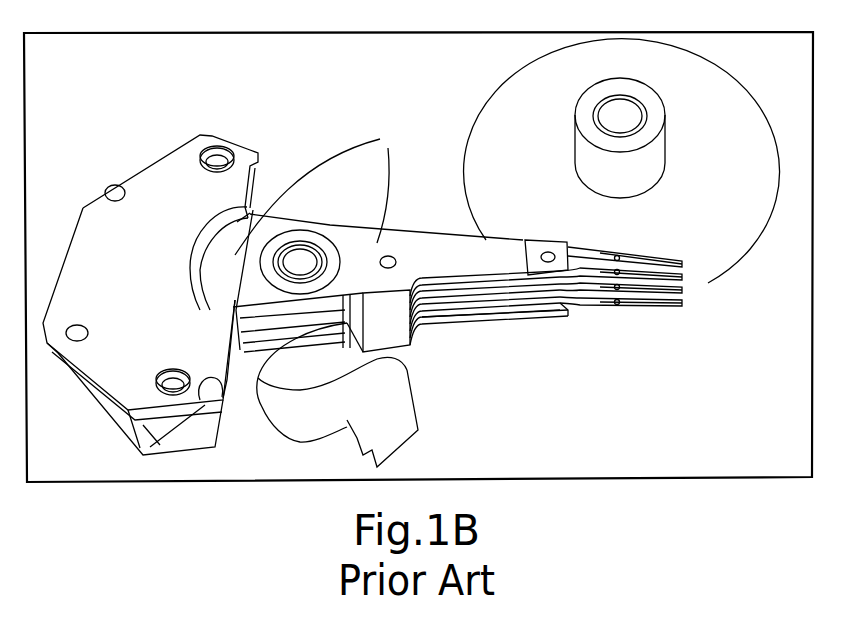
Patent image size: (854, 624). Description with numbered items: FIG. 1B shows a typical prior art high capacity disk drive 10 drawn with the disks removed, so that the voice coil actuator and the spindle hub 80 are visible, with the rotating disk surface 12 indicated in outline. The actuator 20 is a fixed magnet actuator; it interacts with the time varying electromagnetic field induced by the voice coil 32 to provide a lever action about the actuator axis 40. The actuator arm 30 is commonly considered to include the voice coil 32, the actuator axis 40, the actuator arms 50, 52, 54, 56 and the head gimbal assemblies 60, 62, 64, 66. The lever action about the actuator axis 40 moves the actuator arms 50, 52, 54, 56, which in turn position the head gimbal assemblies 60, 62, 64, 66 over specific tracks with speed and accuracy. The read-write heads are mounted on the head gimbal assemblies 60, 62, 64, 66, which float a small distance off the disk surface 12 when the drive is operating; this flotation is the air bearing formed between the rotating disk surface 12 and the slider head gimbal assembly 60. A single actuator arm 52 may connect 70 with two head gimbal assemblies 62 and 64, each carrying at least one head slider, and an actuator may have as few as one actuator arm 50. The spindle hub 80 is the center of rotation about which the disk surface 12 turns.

The disk drive 10 is at (327, 82).
The rotating disk surface 12 is at (703, 73).
The actuator 20 is at (160, 178).
The actuator arm 30 is at (467, 150).
The voice coil 32 is at (218, 272).
The actuator axis 40 is at (303, 255).
The actuator arm 50 is at (473, 250).
The actuator arm 52 is at (522, 300).
The actuator arm 54 is at (500, 315).
The actuator arm 56 is at (482, 323).
The head gimbal assembly 60 is at (659, 255).
The head gimbal assembly 62 is at (672, 277).
The head gimbal assembly 64 is at (660, 302).
The head gimbal assembly 66 is at (656, 306).
The connection 70 is at (540, 245).
The spindle hub 80 is at (657, 153).